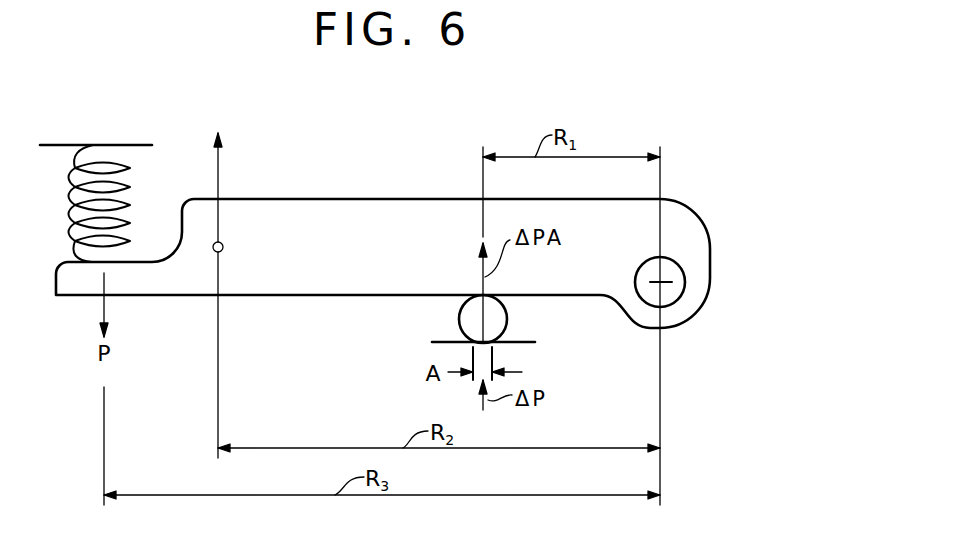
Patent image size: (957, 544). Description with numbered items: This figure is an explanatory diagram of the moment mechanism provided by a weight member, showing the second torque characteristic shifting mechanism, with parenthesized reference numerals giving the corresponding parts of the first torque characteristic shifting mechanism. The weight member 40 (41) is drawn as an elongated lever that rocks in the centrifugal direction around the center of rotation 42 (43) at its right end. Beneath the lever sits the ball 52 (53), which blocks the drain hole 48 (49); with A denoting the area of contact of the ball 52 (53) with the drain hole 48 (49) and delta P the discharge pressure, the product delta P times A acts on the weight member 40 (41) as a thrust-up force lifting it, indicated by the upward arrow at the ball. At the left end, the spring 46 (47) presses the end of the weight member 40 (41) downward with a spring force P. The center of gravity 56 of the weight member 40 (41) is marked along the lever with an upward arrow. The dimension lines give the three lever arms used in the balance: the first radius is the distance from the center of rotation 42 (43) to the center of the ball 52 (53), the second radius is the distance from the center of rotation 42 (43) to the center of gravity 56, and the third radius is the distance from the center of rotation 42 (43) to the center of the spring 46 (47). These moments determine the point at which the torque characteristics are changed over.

The weight member 40 is at (383, 243).
The weight member 41 is at (390, 199).
The center of rotation 42 is at (732, 308).
The center of rotation 43 is at (665, 278).
The spring 46 is at (121, 187).
The spring 47 is at (127, 203).
The drain hole 48 is at (528, 361).
The drain hole 49 is at (490, 359).
The ball 52 is at (541, 319).
The ball 53 is at (502, 321).
The center of gravity 56 is at (223, 242).